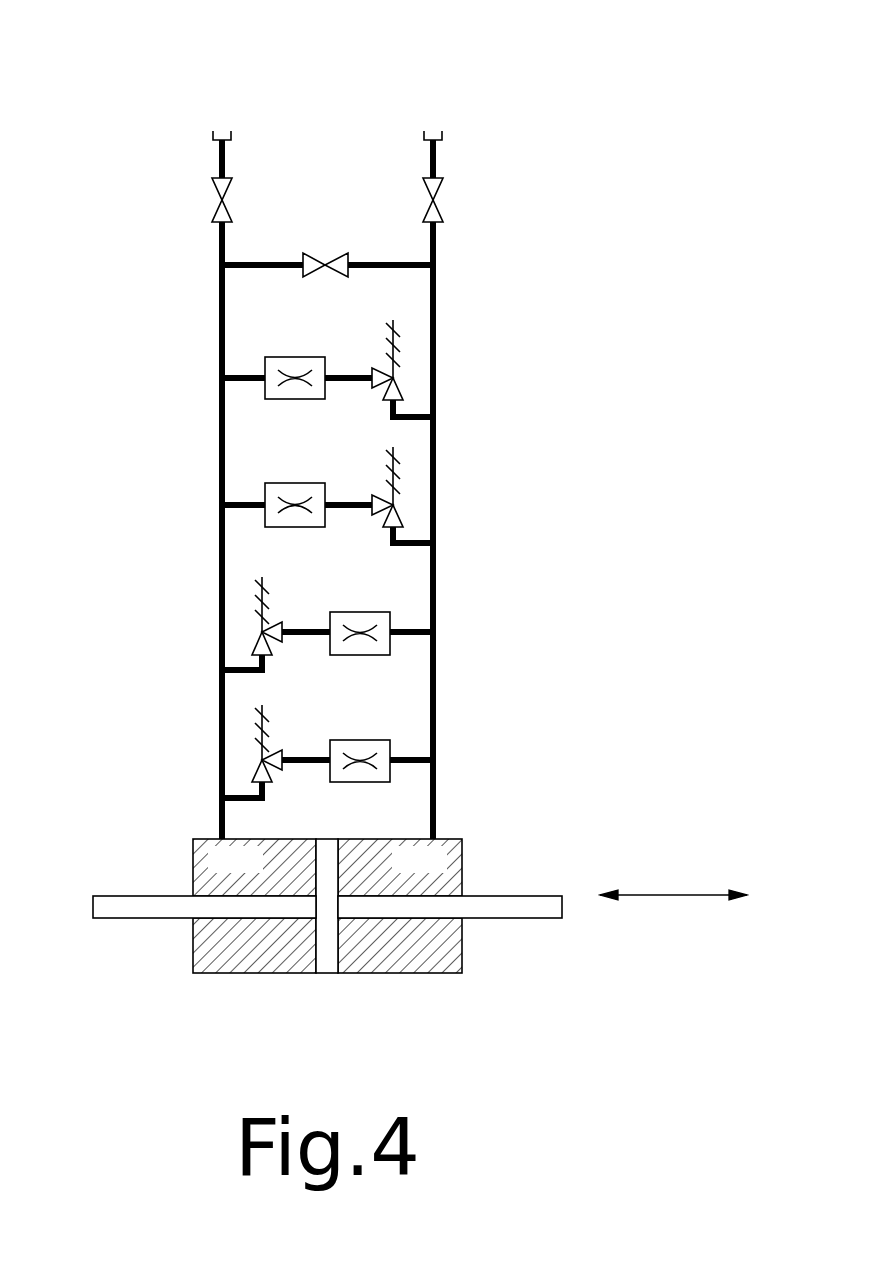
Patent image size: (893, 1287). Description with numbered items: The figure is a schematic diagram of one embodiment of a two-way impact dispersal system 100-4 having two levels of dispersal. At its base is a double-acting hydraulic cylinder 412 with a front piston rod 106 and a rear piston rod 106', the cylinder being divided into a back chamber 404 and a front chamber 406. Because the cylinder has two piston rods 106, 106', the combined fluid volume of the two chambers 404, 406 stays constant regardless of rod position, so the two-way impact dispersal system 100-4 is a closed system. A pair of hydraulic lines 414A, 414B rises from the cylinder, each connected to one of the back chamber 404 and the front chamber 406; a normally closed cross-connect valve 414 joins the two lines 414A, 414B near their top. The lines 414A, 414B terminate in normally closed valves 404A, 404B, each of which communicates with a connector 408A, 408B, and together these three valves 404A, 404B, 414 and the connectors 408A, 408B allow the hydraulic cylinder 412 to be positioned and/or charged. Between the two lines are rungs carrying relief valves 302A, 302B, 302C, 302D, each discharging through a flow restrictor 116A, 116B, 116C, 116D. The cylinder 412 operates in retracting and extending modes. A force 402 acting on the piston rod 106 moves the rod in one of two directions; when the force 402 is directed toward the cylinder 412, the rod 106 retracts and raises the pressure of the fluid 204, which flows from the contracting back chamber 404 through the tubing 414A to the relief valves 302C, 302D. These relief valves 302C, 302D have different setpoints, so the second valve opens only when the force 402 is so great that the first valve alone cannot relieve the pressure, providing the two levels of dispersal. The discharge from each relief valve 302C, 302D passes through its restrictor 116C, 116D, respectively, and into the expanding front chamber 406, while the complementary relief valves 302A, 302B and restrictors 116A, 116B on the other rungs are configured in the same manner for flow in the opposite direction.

The two-way impact dispersal system 100-4 is at (647, 605).
The front piston rod 106 is at (478, 863).
The rear piston rod 106' is at (179, 864).
The flow restrictor 116A is at (320, 357).
The flow restrictor 116B is at (320, 483).
The flow restrictor 116C is at (338, 612).
The flow restrictor 116D is at (338, 740).
The fluid 204 is at (200, 942).
The relief valve 302A is at (398, 378).
The relief valve 302B is at (398, 505).
The relief valve 302C is at (255, 632).
The relief valve 302D is at (255, 760).
The force 402 is at (665, 895).
The back chamber 404 is at (258, 872).
The normally closed valve 404A is at (212, 196).
The normally closed valve 404B is at (434, 196).
The front chamber 406 is at (442, 872).
The connector 408A is at (213, 140).
The connector 408B is at (442, 140).
The double-acting hydraulic cylinder 412 is at (440, 942).
The cross-connect valve 414 is at (340, 258).
The hydraulic line 414A is at (222, 820).
The hydraulic line 414B is at (433, 805).